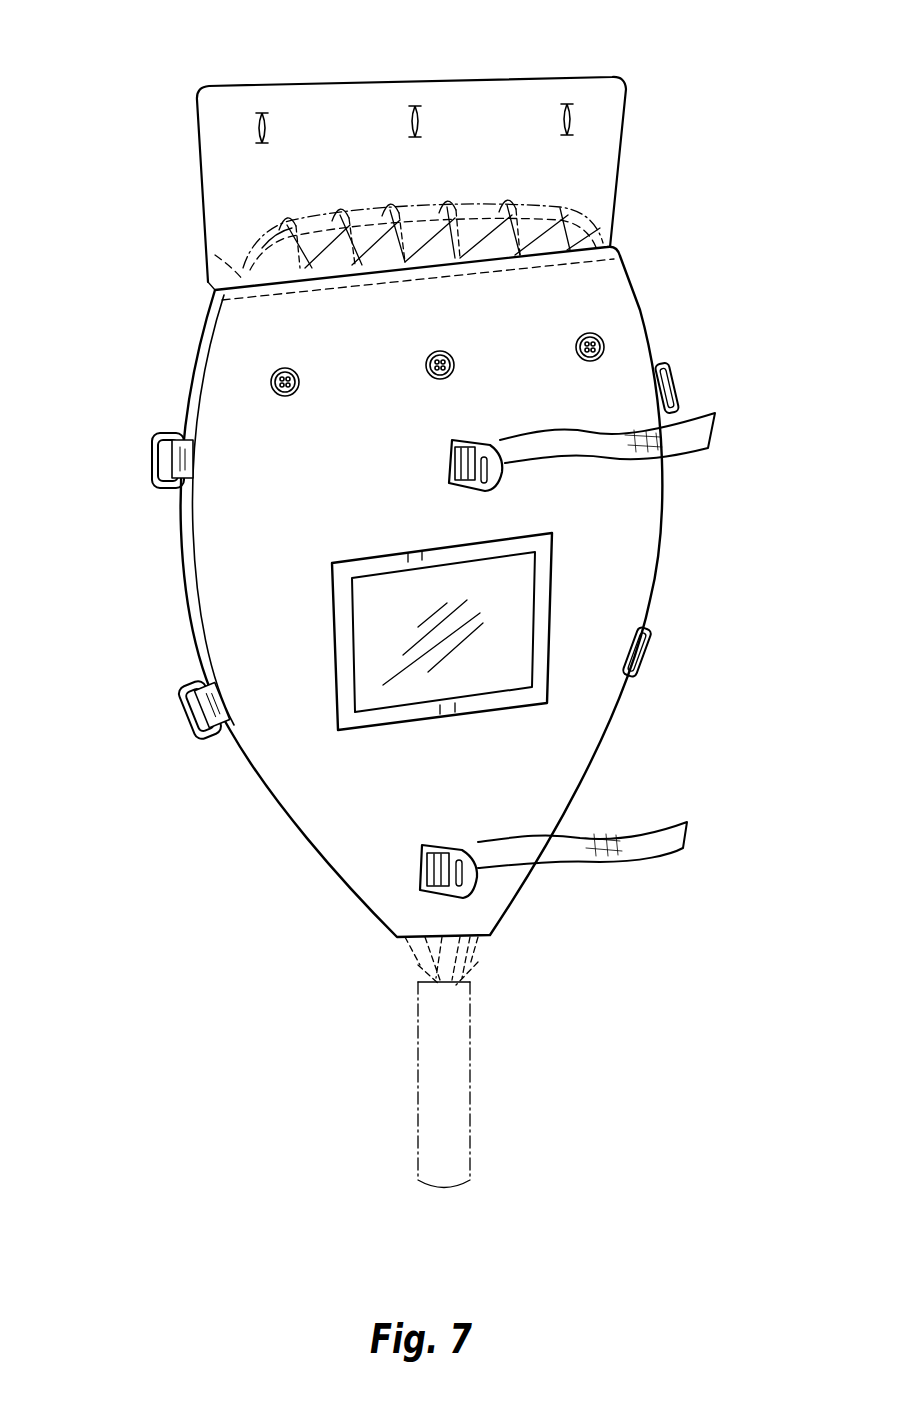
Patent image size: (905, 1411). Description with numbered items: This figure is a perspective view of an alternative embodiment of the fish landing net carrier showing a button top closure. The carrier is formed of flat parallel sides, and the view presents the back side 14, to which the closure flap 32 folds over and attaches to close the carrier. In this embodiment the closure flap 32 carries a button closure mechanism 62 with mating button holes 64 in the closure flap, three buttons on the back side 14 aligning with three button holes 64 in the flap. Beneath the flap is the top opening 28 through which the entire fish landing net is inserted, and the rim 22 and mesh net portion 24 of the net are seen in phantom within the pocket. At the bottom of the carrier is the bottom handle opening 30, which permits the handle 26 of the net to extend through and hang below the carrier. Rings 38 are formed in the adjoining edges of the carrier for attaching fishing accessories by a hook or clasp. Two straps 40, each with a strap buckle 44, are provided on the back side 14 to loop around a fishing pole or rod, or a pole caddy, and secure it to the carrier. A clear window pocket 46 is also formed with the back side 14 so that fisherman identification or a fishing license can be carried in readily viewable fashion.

The back side 14 is at (302, 509).
The rim 22 is at (215, 255).
The mesh net portion 24 is at (575, 215).
The handle 26 is at (455, 1137).
The top opening 28 is at (261, 205).
The bottom handle opening 30 is at (432, 958).
The closure flap 32 is at (638, 126).
The rings 38 is at (678, 392).
The straps 40 is at (697, 450).
The strap buckle 44 is at (500, 473).
The clear window pocket 46 is at (409, 622).
The button closure mechanism 62 is at (604, 345).
The button holes 64 is at (421, 116).